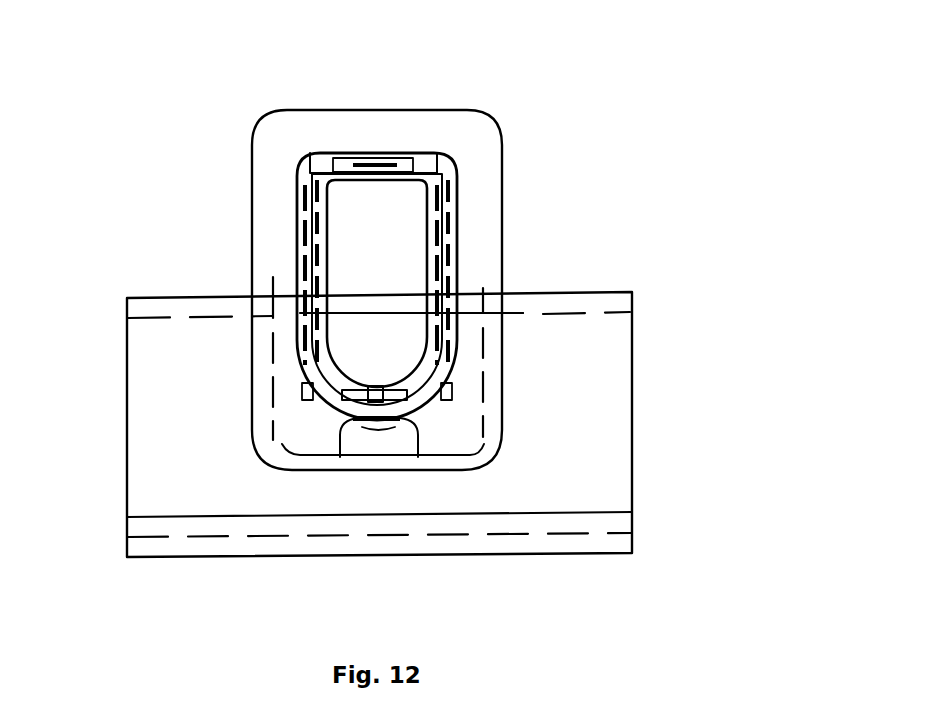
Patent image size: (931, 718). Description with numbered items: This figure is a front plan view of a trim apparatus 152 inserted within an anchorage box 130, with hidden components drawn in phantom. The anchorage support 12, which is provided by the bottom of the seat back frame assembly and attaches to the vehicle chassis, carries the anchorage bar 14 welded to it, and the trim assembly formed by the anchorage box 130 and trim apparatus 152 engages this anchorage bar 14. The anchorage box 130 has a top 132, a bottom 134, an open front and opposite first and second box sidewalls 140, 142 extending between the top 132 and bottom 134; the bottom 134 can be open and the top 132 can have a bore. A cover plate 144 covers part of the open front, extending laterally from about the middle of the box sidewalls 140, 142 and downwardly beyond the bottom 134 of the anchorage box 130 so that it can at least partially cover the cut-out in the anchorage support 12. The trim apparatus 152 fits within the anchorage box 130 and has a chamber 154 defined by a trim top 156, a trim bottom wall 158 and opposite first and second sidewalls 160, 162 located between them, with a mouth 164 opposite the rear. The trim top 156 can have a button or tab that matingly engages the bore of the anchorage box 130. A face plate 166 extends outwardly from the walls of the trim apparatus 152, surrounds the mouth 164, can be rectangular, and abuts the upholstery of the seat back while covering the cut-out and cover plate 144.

The anchorage support 12 is at (143, 435).
The anchorage bar 14 is at (385, 305).
The anchorage box 130 is at (478, 430).
The top 132 is at (382, 152).
The bottom 134 is at (348, 420).
The first box sidewall 140 is at (305, 242).
The second box sidewall 142 is at (457, 240).
The cover plate 144 is at (302, 467).
The trim apparatus 152 is at (478, 136).
The chamber 154 is at (395, 223).
The trim top 156 is at (353, 152).
The trim bottom wall 158 is at (410, 415).
The first sidewall 160 is at (305, 277).
The second sidewall 162 is at (457, 292).
The mouth 164 is at (418, 143).
The face plate 166 is at (268, 173).